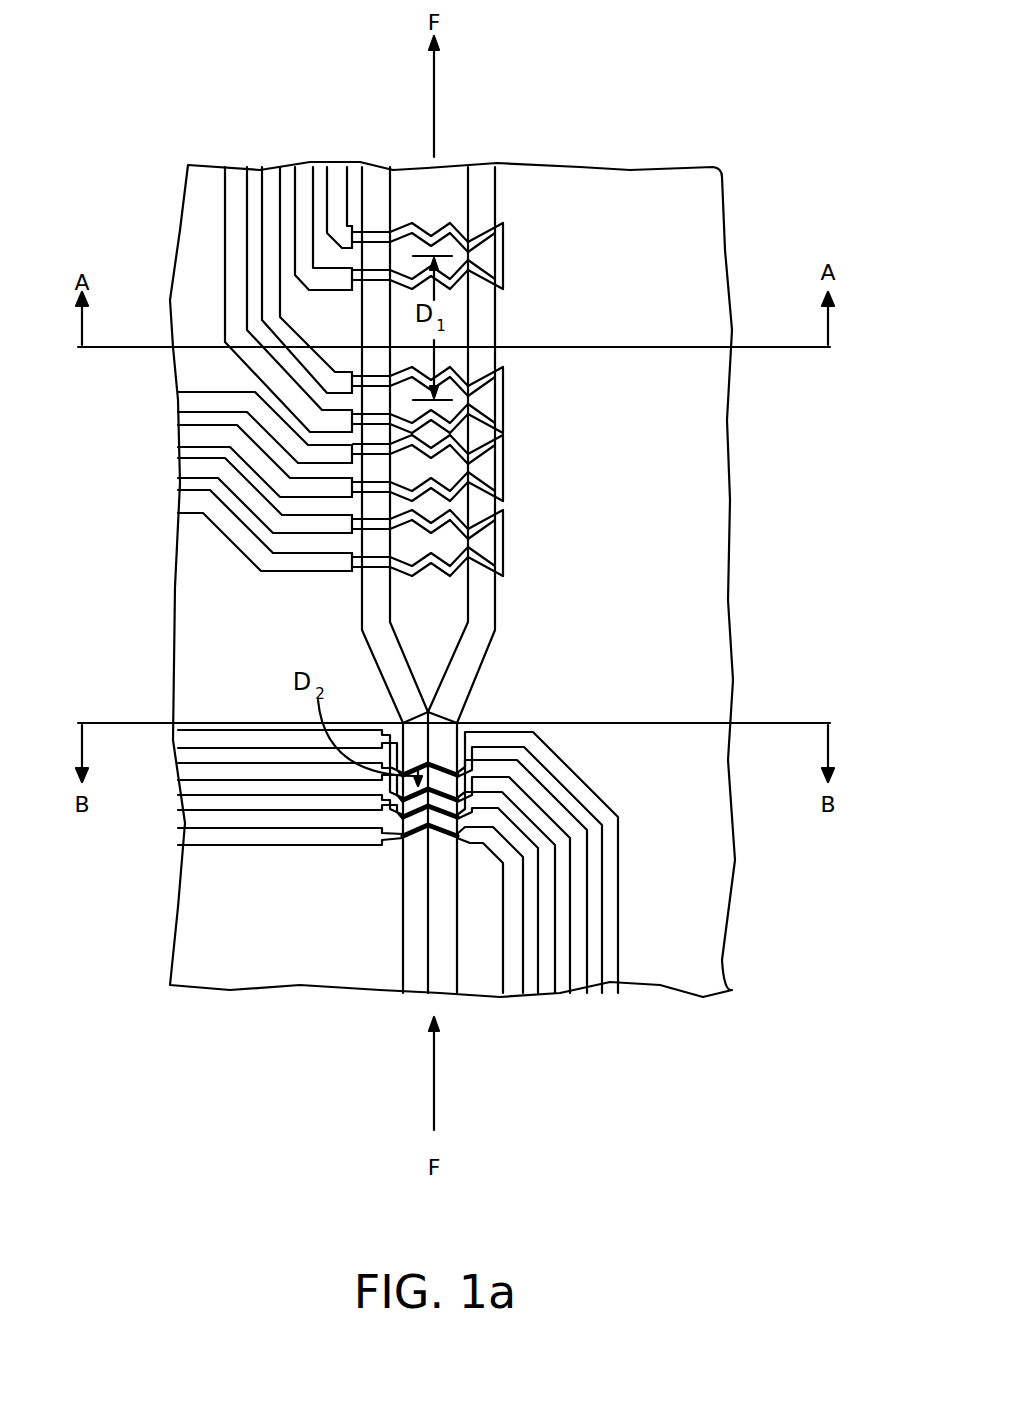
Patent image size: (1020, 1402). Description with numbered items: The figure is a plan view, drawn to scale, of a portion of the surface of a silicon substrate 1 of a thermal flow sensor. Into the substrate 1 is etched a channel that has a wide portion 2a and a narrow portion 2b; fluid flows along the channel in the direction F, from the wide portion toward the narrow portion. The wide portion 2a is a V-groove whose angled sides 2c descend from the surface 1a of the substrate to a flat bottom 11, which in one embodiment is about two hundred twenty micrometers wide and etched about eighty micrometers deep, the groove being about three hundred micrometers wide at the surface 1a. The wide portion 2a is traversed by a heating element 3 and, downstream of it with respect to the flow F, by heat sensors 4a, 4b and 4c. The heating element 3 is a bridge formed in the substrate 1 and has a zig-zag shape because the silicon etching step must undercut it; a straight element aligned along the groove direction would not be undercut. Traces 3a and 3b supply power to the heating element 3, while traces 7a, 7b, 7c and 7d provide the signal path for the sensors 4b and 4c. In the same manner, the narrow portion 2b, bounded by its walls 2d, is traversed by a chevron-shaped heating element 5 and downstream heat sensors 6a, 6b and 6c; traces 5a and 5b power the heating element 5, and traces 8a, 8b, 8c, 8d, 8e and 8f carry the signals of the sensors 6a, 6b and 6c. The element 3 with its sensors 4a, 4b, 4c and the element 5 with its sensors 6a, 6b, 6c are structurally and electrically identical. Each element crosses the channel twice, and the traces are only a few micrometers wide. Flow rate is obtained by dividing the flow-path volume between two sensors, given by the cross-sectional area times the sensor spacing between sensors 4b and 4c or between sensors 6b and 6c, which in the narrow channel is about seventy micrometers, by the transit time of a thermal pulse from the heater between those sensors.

The silicon substrate 1 is at (690, 165).
The surface 1a is at (695, 530).
The wide portion of the channel 2a is at (497, 320).
The narrow portion of the channel 2b is at (403, 930).
The angled sides of channel 2c is at (481, 304).
The outlet channel divider 2d is at (428, 935).
The heating element 3 is at (505, 540).
The trace 3a is at (190, 470).
The trace 3b is at (190, 503).
The heat sensor 4a is at (505, 465).
The heat sensor 4b is at (505, 388).
The heat sensor 4c is at (460, 222).
The heating element 5 is at (443, 805).
The trace 5a is at (195, 838).
The trace 5b is at (513, 987).
The heat sensor 6a is at (440, 855).
The heat sensor 6b is at (470, 778).
The heat sensor 6c is at (440, 768).
The trace 7a is at (237, 185).
The trace 7b is at (270, 185).
The trace 7c is at (303, 200).
The trace 7d is at (340, 185).
The trace 8a is at (200, 742).
The trace 8b is at (197, 772).
The trace 8c is at (610, 918).
The trace 8d is at (578, 980).
The trace 8e is at (203, 802).
The trace 8f is at (547, 987).
The flat bottom 11 is at (445, 188).